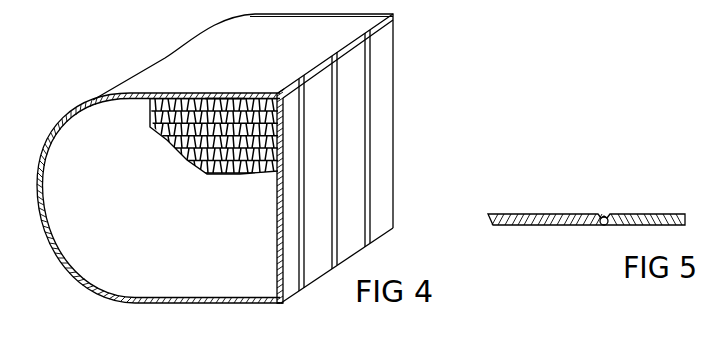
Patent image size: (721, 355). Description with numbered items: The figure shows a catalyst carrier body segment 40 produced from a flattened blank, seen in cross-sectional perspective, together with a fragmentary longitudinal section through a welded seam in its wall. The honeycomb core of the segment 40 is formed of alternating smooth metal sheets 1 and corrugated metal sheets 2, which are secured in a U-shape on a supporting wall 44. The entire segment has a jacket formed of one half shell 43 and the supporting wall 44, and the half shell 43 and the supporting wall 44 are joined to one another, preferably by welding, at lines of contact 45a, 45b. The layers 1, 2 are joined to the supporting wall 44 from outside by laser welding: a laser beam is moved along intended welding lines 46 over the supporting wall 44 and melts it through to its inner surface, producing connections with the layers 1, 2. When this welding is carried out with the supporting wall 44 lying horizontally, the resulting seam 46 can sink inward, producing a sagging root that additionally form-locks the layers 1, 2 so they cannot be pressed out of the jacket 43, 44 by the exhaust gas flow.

In FIG. 4, the smooth metal sheets 1 is at (193, 96).
In FIG. 4, the corrugated metal sheets 2 is at (211, 96).
In FIG. 4, the segment 40 is at (81, 253).
In FIG. 4, the half shell 43 is at (84, 107).
In FIG. 4, the supporting wall 44 is at (276, 208).
In FIG. 5, the supporting wall 44 is at (561, 213).
In FIG. 4, the line of contact 45a is at (277, 91).
In FIG. 4, the line of contact 45b is at (278, 303).
In FIG. 4, the welding line 46 is at (337, 152).
In FIG. 5, the welding line 46 is at (603, 226).